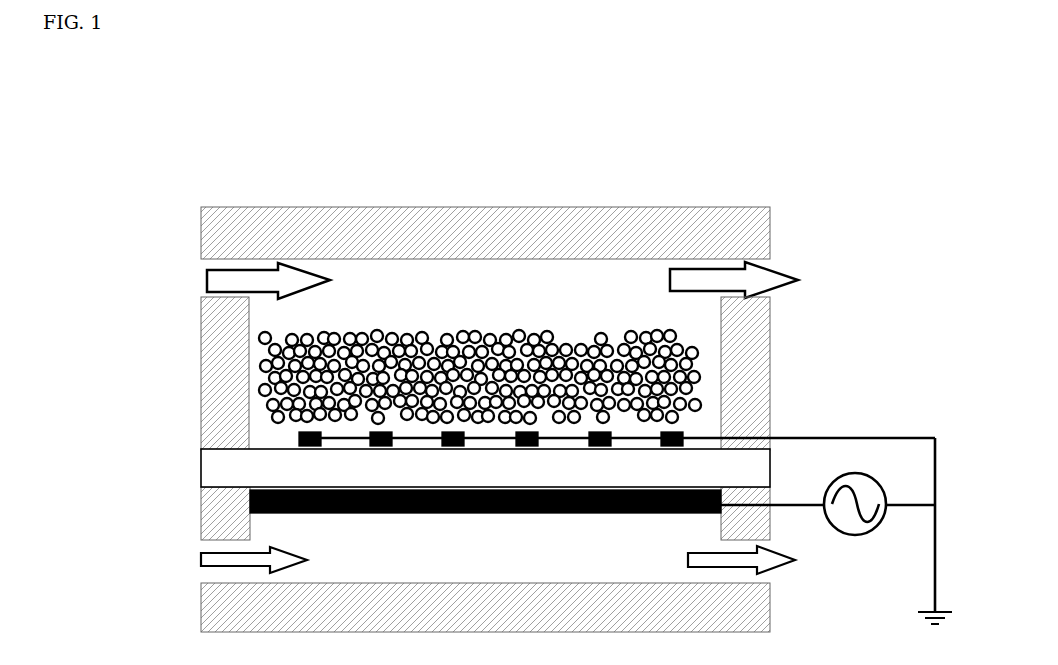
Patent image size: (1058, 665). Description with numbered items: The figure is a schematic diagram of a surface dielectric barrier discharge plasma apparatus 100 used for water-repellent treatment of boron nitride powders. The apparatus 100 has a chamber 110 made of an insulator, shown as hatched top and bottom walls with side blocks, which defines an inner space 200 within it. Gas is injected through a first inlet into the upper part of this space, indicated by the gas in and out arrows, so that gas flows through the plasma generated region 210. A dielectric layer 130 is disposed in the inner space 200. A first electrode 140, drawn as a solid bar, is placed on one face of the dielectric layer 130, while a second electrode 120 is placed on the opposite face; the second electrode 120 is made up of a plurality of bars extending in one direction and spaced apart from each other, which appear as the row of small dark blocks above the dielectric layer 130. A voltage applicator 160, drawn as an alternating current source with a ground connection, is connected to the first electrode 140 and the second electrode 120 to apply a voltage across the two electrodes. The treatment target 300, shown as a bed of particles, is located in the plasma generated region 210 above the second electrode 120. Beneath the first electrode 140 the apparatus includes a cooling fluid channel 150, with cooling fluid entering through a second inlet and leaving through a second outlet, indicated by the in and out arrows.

The surface dielectric barrier discharge plasma apparatus 100 is at (507, 114).
The chamber 110 is at (216, 232).
The second electrode 120 is at (300, 438).
The dielectric layer 130 is at (216, 470).
The first electrode 140 is at (250, 499).
The cooling fluid channel 150 is at (480, 584).
The voltage applicator 160 is at (897, 438).
The inner space 200 is at (450, 321).
The plasma generated region 210 is at (700, 413).
The treatment target 300 is at (680, 333).